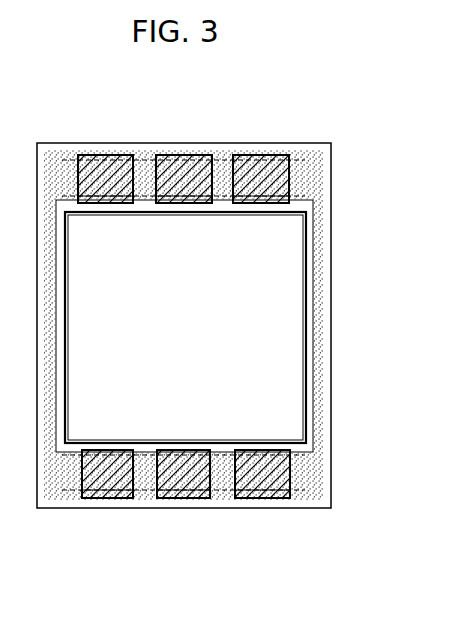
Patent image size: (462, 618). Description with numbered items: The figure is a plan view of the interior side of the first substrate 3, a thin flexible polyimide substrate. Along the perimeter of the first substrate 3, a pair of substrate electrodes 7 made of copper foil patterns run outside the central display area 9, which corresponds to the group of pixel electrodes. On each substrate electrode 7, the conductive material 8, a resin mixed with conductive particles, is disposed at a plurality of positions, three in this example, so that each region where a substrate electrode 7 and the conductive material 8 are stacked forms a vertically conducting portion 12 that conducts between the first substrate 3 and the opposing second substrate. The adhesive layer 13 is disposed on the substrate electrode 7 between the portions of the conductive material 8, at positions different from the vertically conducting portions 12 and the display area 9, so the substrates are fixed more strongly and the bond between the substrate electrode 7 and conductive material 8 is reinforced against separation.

The first substrate 3 is at (331, 283).
The substrate electrode 7 is at (150, 158).
The conductive material 8 is at (104, 155).
The display area 9 is at (273, 356).
The vertically conducting portion 12 is at (130, 158).
The adhesive layer 13 is at (63, 152).